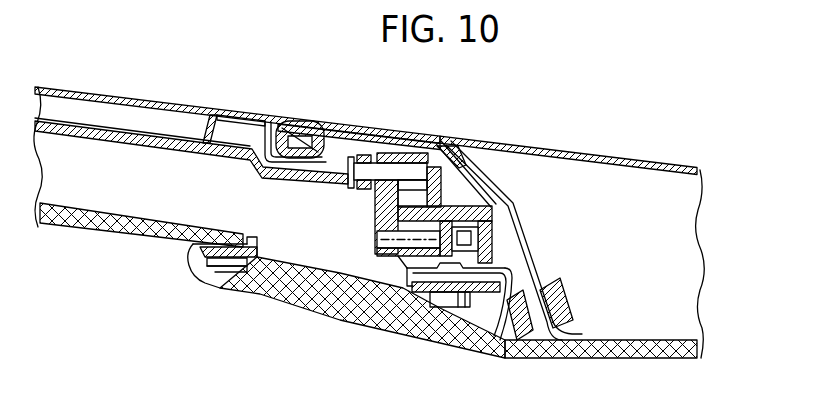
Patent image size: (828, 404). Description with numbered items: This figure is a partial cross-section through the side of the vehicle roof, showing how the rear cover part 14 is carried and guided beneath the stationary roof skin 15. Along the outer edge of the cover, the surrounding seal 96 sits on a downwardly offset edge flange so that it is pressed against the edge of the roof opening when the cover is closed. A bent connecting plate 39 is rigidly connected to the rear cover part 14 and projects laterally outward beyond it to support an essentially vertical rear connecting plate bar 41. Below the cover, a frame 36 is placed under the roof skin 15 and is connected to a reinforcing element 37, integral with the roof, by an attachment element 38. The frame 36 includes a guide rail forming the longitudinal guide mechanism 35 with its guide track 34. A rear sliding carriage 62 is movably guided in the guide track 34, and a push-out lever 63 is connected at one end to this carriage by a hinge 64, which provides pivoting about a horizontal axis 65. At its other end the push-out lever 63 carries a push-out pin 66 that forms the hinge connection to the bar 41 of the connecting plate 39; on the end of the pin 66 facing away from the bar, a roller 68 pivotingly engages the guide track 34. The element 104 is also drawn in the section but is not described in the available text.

The rear cover part 14 is at (108, 100).
The stationary roof skin 15 is at (626, 160).
The bent connecting plate 39 is at (146, 140).
The surrounding seal 96 is at (282, 122).
The rear connecting plate bar 41 is at (360, 157).
The roller 68 is at (407, 153).
The push-out pin 66 is at (430, 166).
The push-out lever 63 is at (377, 207).
The rear sliding carriage 62 is at (482, 206).
The longitudinal guide mechanism 35 is at (503, 200).
The reinforcing element 37 is at (525, 245).
The guide track 34 is at (390, 256).
The hinge 64 is at (368, 240).
The attachment element 38 is at (510, 277).
The horizontal axis 65 is at (325, 305).
The frame 36 is at (288, 285).
The lower panel 104 is at (97, 220).